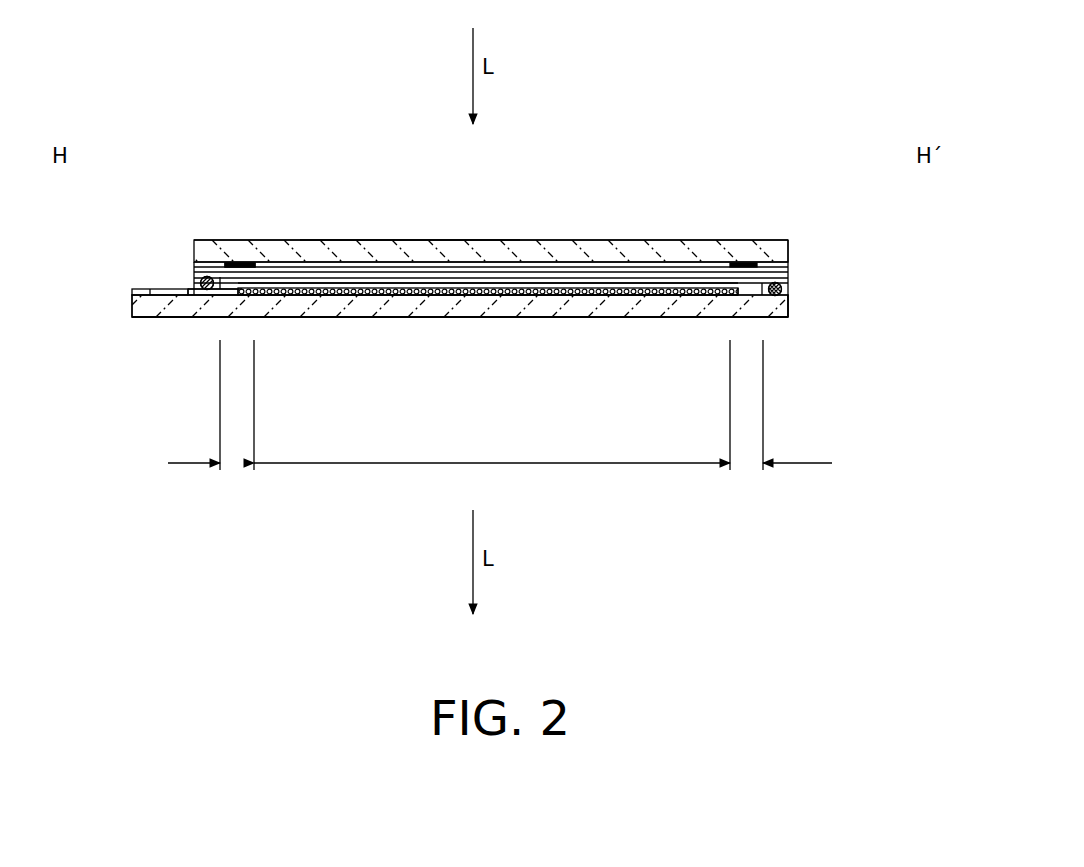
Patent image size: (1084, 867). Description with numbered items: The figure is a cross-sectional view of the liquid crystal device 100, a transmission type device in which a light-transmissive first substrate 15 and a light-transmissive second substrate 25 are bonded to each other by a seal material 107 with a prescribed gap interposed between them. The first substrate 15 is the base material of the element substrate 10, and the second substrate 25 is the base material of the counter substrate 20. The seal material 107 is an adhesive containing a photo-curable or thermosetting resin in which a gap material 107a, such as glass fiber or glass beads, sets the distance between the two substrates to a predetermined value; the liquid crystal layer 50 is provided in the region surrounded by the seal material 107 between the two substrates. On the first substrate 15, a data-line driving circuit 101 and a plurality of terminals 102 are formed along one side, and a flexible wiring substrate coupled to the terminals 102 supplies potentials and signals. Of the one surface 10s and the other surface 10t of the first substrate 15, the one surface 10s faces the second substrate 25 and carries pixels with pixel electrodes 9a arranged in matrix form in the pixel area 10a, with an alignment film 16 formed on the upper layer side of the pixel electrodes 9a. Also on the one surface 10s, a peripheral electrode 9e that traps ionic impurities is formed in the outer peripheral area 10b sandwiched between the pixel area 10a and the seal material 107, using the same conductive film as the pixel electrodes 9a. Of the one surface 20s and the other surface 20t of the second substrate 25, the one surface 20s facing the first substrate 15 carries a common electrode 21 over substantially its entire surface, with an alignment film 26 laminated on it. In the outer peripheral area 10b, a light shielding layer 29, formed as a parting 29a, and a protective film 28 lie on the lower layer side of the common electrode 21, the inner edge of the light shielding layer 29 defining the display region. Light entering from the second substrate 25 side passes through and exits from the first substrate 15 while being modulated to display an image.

The liquid crystal device 100 is at (781, 109).
The counter substrate 20 is at (781, 237).
The one surface of the second substrate 20s is at (370, 240).
The other surface of the second substrate 20t is at (446, 240).
The second substrate 25 is at (783, 256).
The common electrode 21 is at (400, 265).
The protective film 28 is at (470, 270).
The alignment film (second alignment film) 26 is at (550, 277).
The alignment film (first alignment film) 16 is at (590, 289).
The light shielding layer 29 is at (243, 264).
The parting 29a is at (240, 265).
The seal material 107 is at (790, 287).
The gap material 107a is at (491, 286).
The pixel electrode 9a is at (488, 296).
The liquid crystal layer 50 is at (617, 284).
The terminals 102 is at (140, 290).
The data-line driving circuit 101 is at (196, 296).
The peripheral electrode 9e is at (242, 297).
The first substrate 15 is at (782, 306).
The element substrate 10 is at (662, 313).
The one surface of the first substrate 10s is at (325, 296).
The other surface of the first substrate 10t is at (405, 317).
The pixel area 10a is at (492, 480).
The outer peripheral area 10b is at (500, 418).